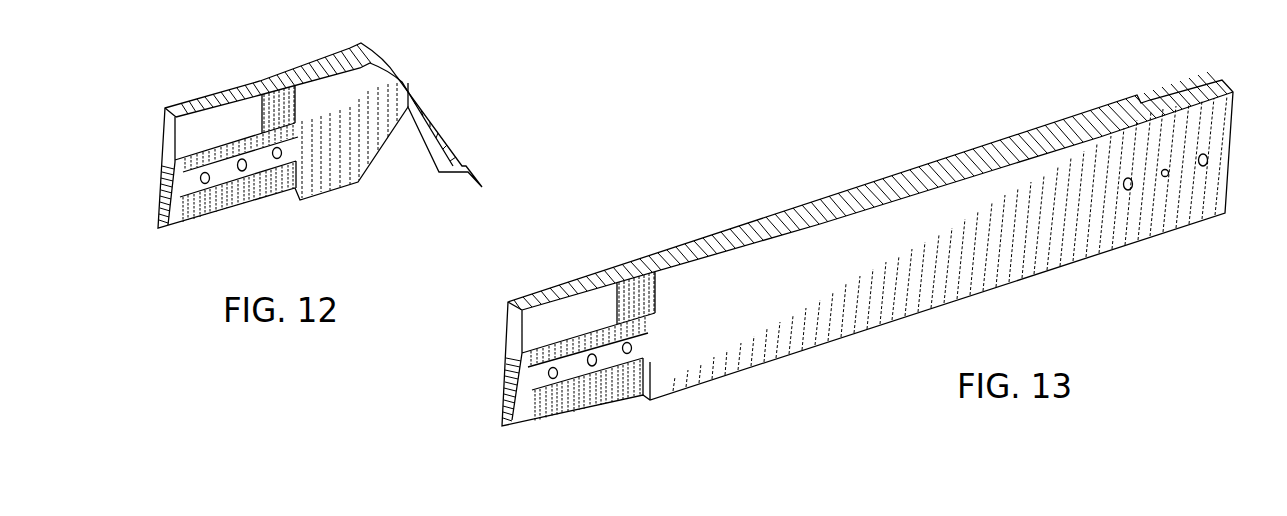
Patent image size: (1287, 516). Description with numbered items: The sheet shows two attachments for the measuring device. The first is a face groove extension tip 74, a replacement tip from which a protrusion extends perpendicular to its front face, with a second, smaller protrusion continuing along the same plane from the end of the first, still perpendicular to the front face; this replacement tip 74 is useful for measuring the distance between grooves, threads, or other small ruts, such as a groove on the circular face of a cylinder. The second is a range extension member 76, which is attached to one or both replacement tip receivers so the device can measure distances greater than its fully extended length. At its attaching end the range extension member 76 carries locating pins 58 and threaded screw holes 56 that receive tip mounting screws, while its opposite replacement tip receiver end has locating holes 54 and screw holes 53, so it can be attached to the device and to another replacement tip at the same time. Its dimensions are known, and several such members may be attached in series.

In FIG. 12, the face groove extension tip 74 is at (433, 74).
In FIG. 12, the threaded screw holes 56 is at (275, 147).
In FIG. 13, the threaded screw holes 56 is at (625, 342).
In FIG. 12, the locating pins 58 is at (246, 172).
In FIG. 13, the locating pins 58 is at (594, 367).
In FIG. 13, the range extension member 76 is at (824, 184).
In FIG. 13, the screw holes 53 is at (1203, 154).
In FIG. 13, the locating holes 54 is at (1166, 178).